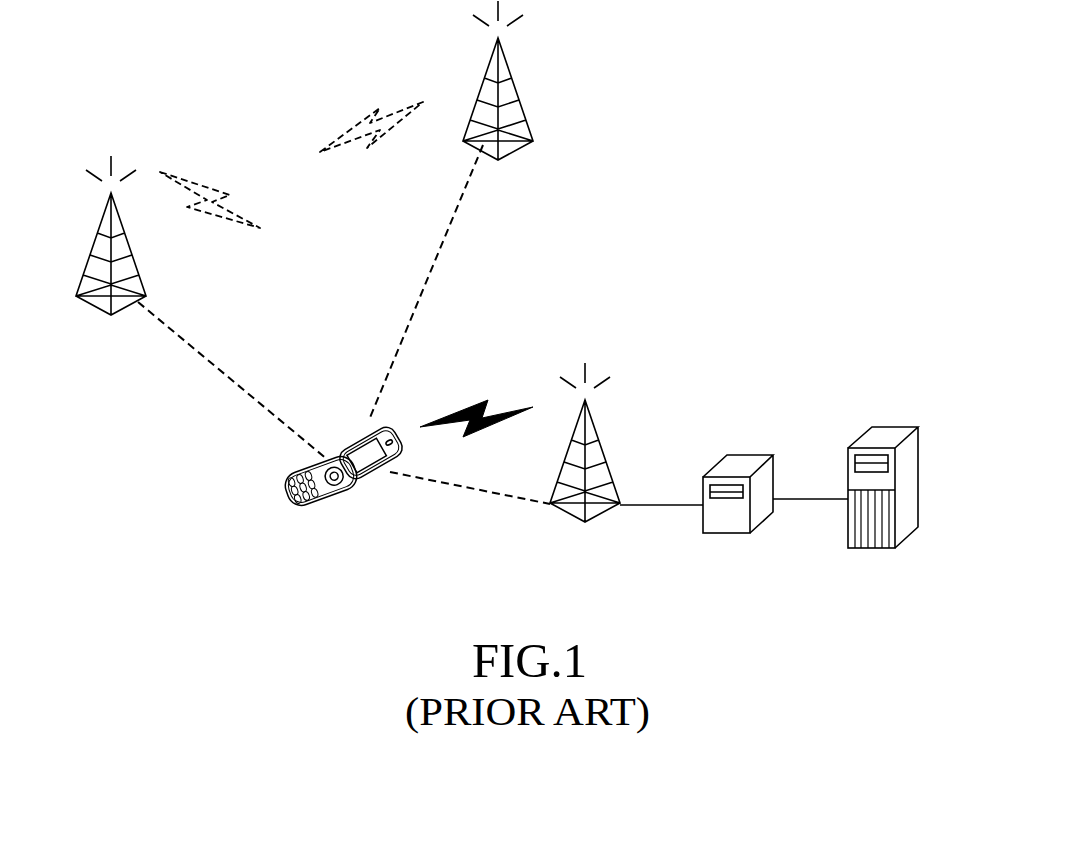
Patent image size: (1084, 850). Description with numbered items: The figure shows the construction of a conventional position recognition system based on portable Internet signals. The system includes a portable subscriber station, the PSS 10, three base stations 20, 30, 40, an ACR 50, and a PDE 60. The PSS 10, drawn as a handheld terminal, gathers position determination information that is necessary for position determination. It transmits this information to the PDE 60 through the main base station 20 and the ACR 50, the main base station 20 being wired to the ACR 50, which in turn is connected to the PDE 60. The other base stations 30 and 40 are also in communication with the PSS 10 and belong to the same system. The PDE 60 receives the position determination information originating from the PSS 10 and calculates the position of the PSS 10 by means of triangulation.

The PSS (Portable Subscriber Station) 10 is at (347, 497).
The main base station 20 is at (567, 455).
The base station 30 is at (93, 247).
The base station 40 is at (517, 86).
The ACR 50 is at (774, 463).
The PDE 60 is at (920, 477).